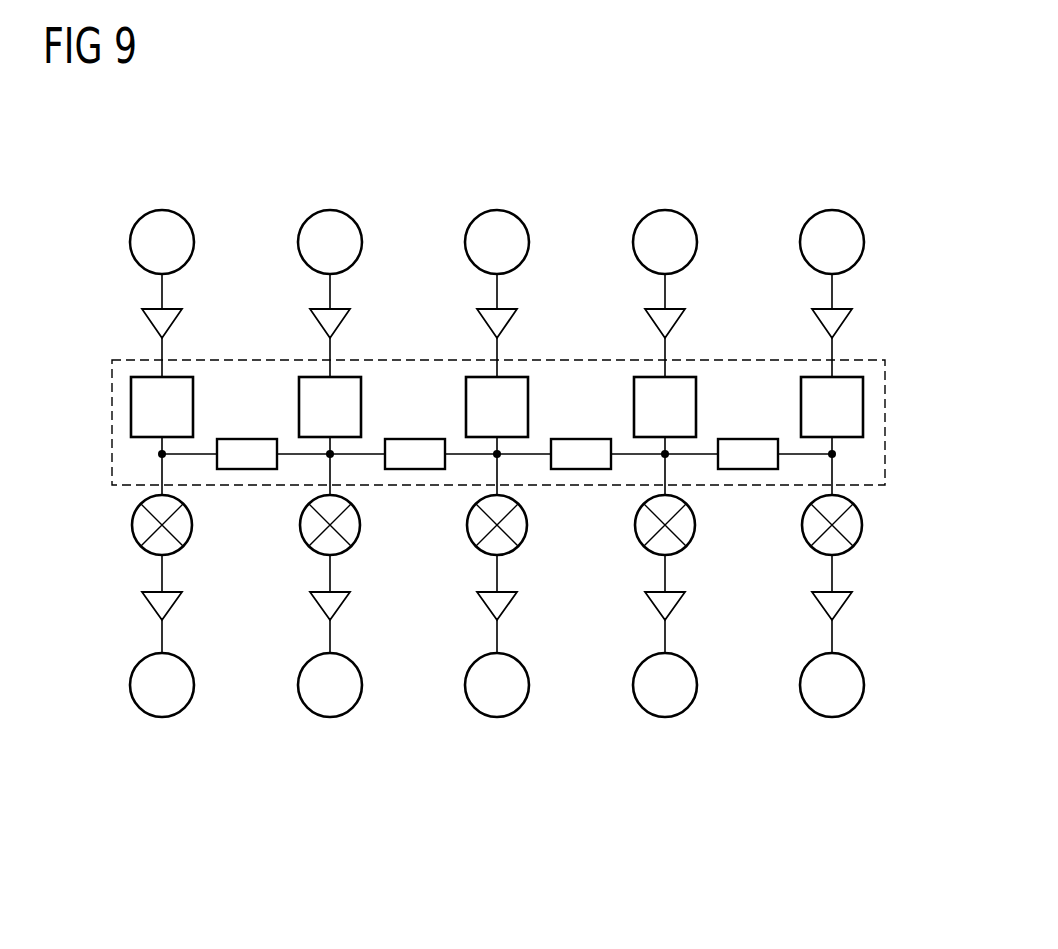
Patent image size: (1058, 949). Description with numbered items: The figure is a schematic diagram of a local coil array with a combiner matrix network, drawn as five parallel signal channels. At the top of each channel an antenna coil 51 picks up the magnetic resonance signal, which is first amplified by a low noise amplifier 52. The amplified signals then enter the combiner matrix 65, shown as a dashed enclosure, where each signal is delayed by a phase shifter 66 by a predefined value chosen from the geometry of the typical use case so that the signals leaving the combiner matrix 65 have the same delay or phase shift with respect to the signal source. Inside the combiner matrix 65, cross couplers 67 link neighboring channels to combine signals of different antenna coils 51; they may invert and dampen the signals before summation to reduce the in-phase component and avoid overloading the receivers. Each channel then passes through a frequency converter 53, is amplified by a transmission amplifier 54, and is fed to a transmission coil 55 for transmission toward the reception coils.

The antenna coil 51 is at (830, 210).
The low noise amplifier 52 is at (847, 318).
The frequency converter 53 is at (862, 523).
The transmission amplifier 54 is at (848, 603).
The transmission coil 55 is at (835, 765).
The combiner matrix 65 is at (885, 410).
The phase shifter 66 is at (131, 413).
The cross coupler 67 is at (251, 471).